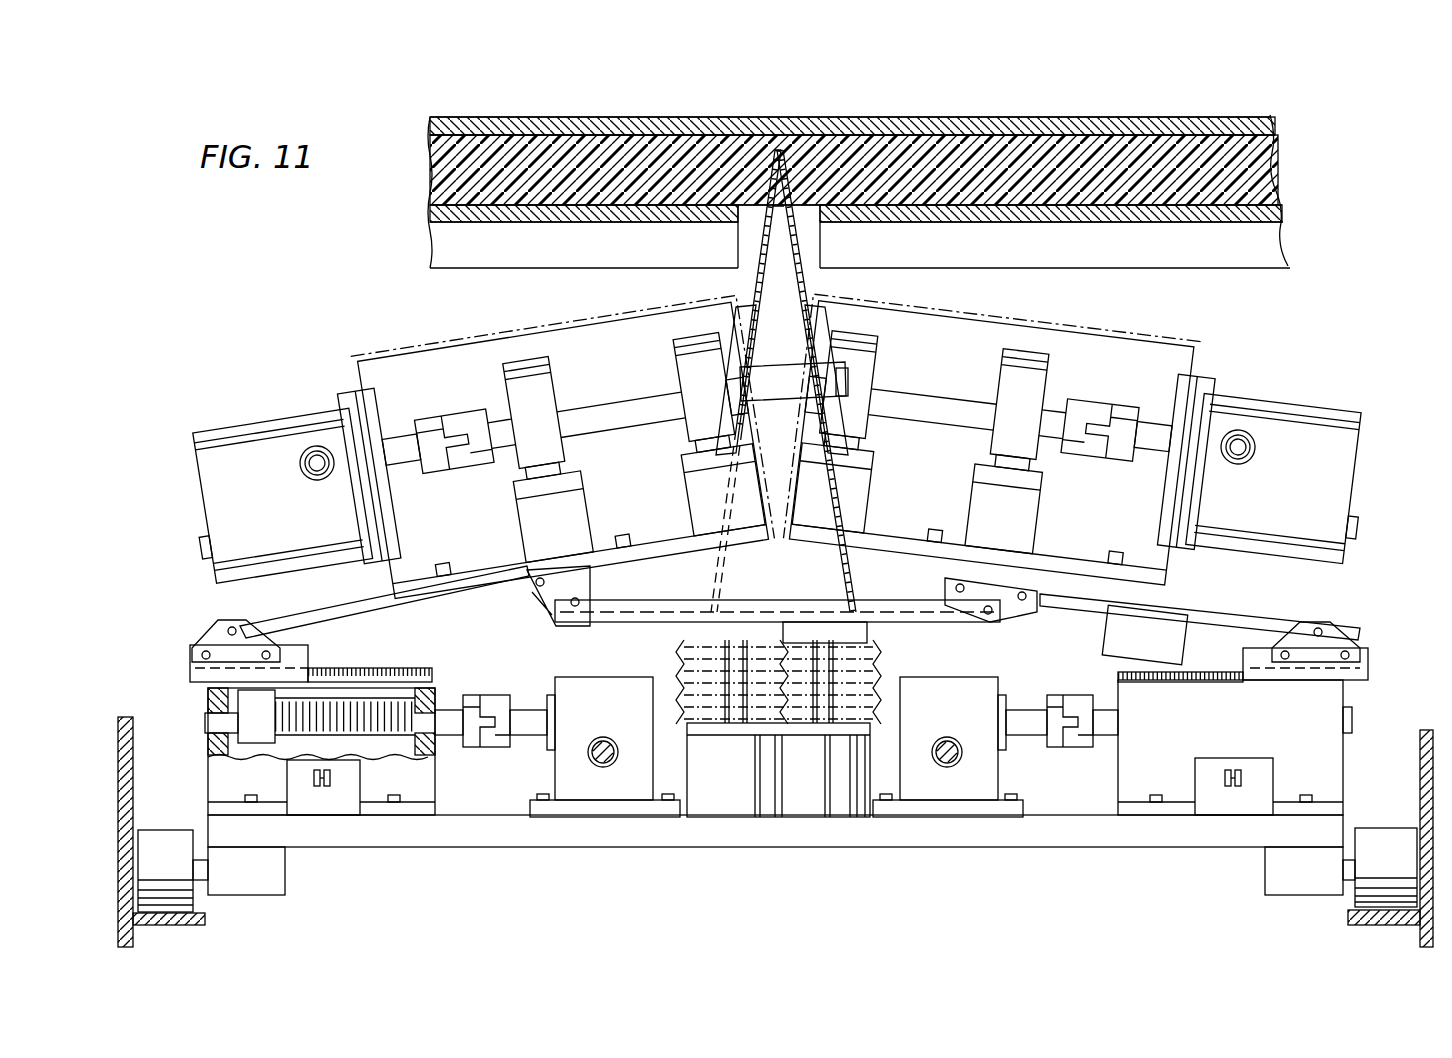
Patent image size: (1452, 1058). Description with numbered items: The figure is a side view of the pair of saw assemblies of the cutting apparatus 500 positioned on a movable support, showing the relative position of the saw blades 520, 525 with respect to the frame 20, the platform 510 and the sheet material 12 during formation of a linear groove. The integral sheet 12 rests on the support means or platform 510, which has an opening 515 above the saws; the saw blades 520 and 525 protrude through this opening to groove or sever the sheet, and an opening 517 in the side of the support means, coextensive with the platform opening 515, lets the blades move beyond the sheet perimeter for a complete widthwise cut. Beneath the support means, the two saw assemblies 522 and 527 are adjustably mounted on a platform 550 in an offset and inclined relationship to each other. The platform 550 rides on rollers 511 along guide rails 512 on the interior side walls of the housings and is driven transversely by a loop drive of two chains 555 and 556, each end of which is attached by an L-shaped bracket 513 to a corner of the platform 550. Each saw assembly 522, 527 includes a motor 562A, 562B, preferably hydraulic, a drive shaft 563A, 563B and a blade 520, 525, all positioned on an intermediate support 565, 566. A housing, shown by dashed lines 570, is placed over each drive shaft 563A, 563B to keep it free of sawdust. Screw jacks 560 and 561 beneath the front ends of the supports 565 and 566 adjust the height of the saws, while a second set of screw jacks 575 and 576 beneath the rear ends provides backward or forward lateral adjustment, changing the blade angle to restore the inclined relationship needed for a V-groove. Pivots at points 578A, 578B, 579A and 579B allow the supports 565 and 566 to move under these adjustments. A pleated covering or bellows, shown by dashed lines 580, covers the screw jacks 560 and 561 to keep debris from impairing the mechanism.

The integral sheet 12 is at (1150, 120).
The platform 510 is at (1290, 214).
The frame 20 is at (1218, 262).
The opening 517 is at (815, 232).
The opening 515 is at (740, 222).
The saw blade 520 is at (752, 285).
The saw blade 525 is at (802, 286).
The housing 570 is at (573, 325).
The motor 562A is at (265, 448).
The motor 562B is at (1312, 412).
The drive shaft 563A is at (600, 458).
The drive shaft 563B is at (953, 452).
The saw assembly 522 is at (332, 345).
The saw assembly 527 is at (1222, 336).
The cutting apparatus 500 is at (1360, 292).
The bellows 580 is at (680, 662).
The screw jack 560 is at (730, 700).
The screw jack 561 is at (835, 706).
The screw jack 575 is at (218, 765).
The screw jack 576 is at (1325, 706).
The L-shaped bracket 513 is at (345, 808).
The chain 555 is at (318, 790).
The chain 556 is at (1235, 772).
The platform 550 is at (1075, 840).
The rollers 511 is at (160, 842).
The guide rails 512 is at (177, 928).
The pivot 578A is at (190, 660).
The pivot 578B is at (550, 598).
The intermediate support 565 is at (357, 608).
The intermediate support 566 is at (1088, 605).
The pivot 579A is at (1012, 600).
The pivot 579B is at (1342, 628).